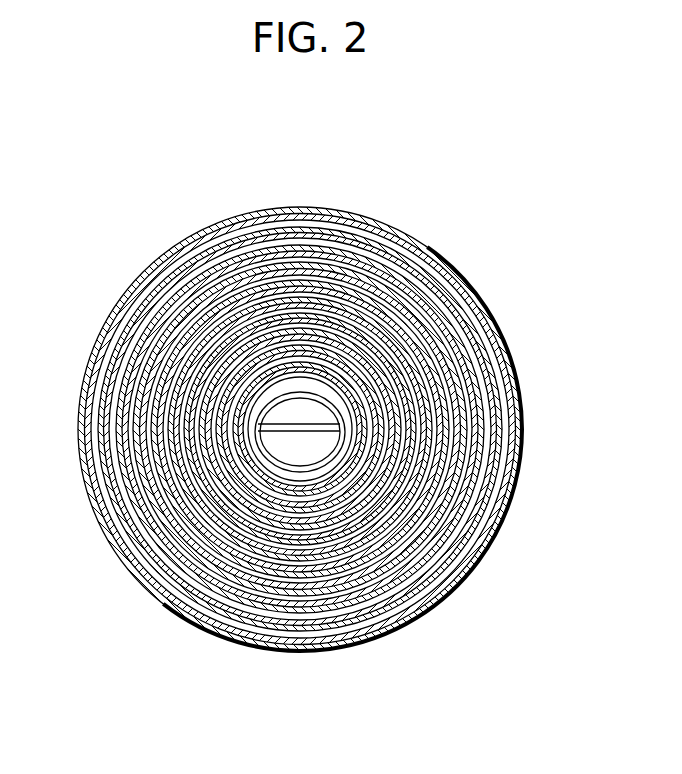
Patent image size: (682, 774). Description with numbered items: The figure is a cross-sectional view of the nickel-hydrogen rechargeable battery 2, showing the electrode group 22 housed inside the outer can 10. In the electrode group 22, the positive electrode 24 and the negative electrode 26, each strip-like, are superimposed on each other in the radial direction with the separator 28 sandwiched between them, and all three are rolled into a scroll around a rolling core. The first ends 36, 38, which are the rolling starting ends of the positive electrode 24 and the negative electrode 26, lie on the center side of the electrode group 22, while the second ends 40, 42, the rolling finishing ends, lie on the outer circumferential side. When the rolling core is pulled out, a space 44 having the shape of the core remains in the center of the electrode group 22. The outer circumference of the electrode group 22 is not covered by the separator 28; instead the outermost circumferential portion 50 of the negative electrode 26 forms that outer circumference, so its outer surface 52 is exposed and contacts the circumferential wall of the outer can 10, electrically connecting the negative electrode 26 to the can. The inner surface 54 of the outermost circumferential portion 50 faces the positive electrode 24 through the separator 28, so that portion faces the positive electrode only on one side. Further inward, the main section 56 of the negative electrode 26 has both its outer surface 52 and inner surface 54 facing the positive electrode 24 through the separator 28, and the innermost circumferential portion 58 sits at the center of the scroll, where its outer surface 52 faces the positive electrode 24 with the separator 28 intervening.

The wound electrode body 2 is at (421, 200).
The outer can 10 is at (493, 317).
The electrode group 22 is at (213, 597).
The positive electrode 24 is at (487, 468).
The negative electrode 26 is at (512, 347).
The separator 28 is at (495, 417).
The first end of the positive electrode 36 is at (222, 527).
The first end of the negative electrode 38 is at (240, 460).
The second end of the positive electrode 40 is at (365, 590).
The second end of the negative electrode 42 is at (383, 612).
The space 44 is at (297, 407).
The outermost circumferential portion 50 is at (453, 272).
The outer surface 52 is at (293, 215).
The inner surface 54 is at (267, 238).
The main section 56 is at (190, 318).
The innermost circumferential portion 58 is at (320, 363).